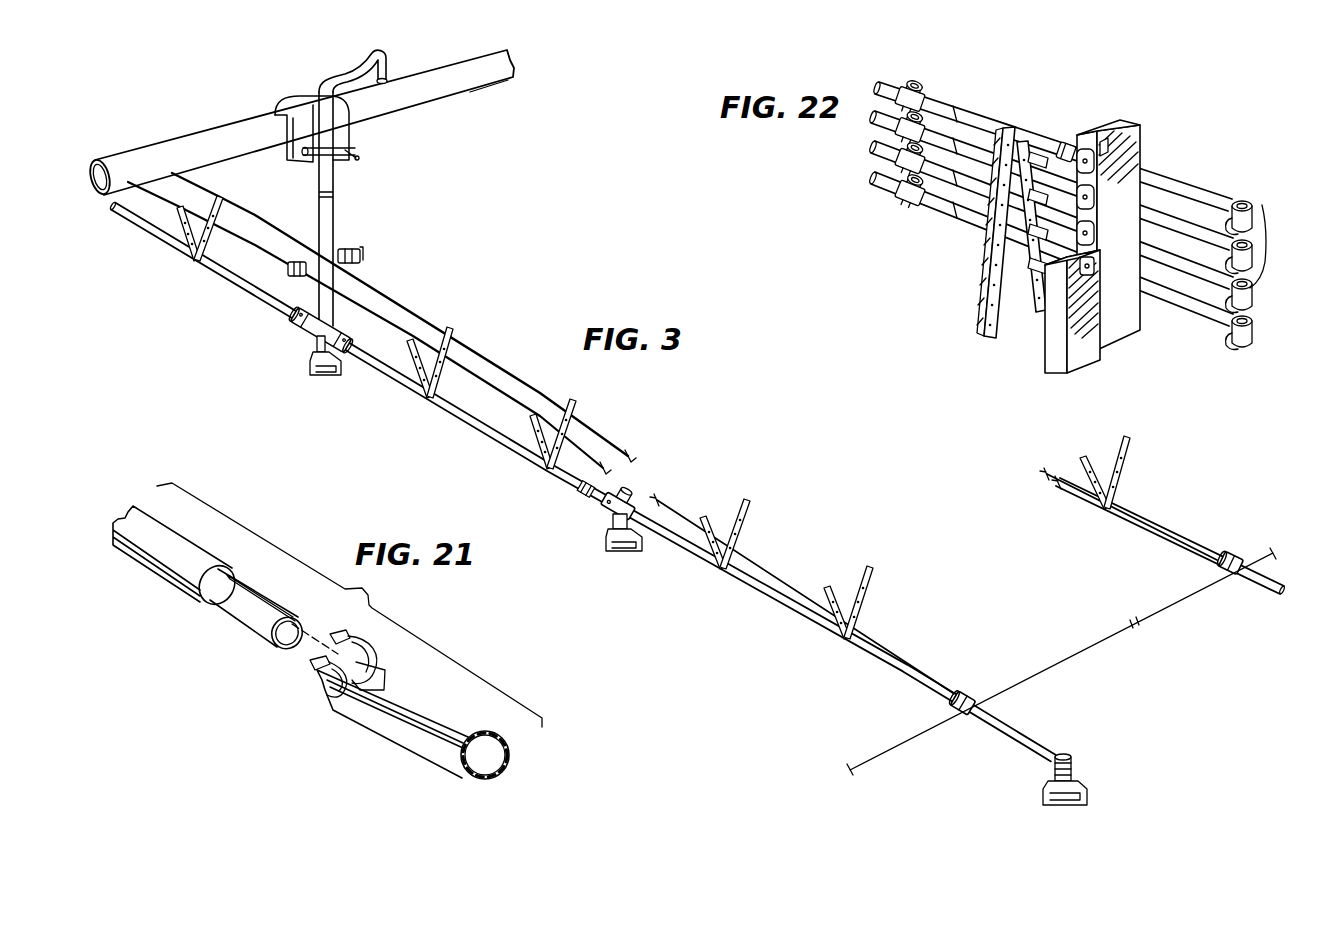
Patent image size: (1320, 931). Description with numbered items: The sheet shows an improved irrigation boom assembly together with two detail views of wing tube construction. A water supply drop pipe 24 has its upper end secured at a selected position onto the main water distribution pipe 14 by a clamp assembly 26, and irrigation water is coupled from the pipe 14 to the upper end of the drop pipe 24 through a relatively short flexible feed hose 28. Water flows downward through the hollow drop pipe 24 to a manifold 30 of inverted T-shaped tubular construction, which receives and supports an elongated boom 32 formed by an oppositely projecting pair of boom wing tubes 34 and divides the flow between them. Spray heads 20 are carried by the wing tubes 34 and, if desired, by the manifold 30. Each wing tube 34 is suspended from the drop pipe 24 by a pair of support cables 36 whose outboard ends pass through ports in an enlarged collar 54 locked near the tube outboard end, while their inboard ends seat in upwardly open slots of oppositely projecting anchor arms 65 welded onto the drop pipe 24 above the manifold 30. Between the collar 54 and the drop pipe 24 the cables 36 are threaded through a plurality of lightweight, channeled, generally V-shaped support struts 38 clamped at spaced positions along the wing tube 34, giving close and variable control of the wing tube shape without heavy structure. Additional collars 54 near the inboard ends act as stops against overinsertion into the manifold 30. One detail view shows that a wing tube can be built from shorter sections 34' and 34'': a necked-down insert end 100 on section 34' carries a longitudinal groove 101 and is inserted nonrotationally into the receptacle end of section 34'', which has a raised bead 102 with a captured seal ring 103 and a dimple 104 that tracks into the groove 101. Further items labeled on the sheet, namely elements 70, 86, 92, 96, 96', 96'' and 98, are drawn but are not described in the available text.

In FIG. 3, the main water distribution pipe 14 is at (474, 88).
In FIG. 3, the spray head 20 is at (310, 380).
In FIG. 3, the water supply drop pipe 24 is at (333, 205).
In FIG. 3, the clamp assembly 26 is at (267, 98).
In FIG. 3, the flexible feed hose 28 is at (353, 72).
In FIG. 3, the manifold 30 is at (308, 328).
In FIG. 3, the boom 32 is at (490, 333).
In FIG. 3, the boom wing tube 34 is at (696, 482).
In FIG. 22, the boom wing tube 34 is at (1051, 204).
In FIG. 21, the wing tube section 34' is at (175, 558).
In FIG. 21, the wing tube section 34'' is at (413, 724).
In FIG. 3, the support cable 36 is at (258, 216).
In FIG. 3, the support strut 38 is at (187, 243).
In FIG. 22, the support strut 38 is at (985, 273).
In FIG. 3, the enlarged collar 54 is at (963, 690).
In FIG. 22, the enlarged collar 54 is at (1075, 158).
In FIG. 3, the anchor arm 65 is at (340, 250).
In FIG. 3, the nozzle tee 70 is at (637, 490).
In FIG. 22, the nozzle tee 70 is at (923, 82).
In FIG. 3, the elbow fitting 86 is at (1073, 756).
In FIG. 22, the elbow fitting 86 is at (1250, 201).
In FIG. 3, the supply line 92 is at (1080, 657).
In FIG. 22, the pipe clamp 96 is at (1127, 261).
In FIG. 22, the pipe clamp 96' is at (1150, 140).
In FIG. 22, the pipe clamp 96'' is at (1052, 307).
In FIG. 22, the post 98 is at (1140, 127).
In FIG. 21, the necked-down insert end 100 is at (262, 628).
In FIG. 21, the longitudinal groove 101 is at (236, 588).
In FIG. 21, the raised bead 102 is at (320, 690).
In FIG. 21, the captured seal ring 103 is at (309, 663).
In FIG. 21, the dimple 104 is at (368, 663).